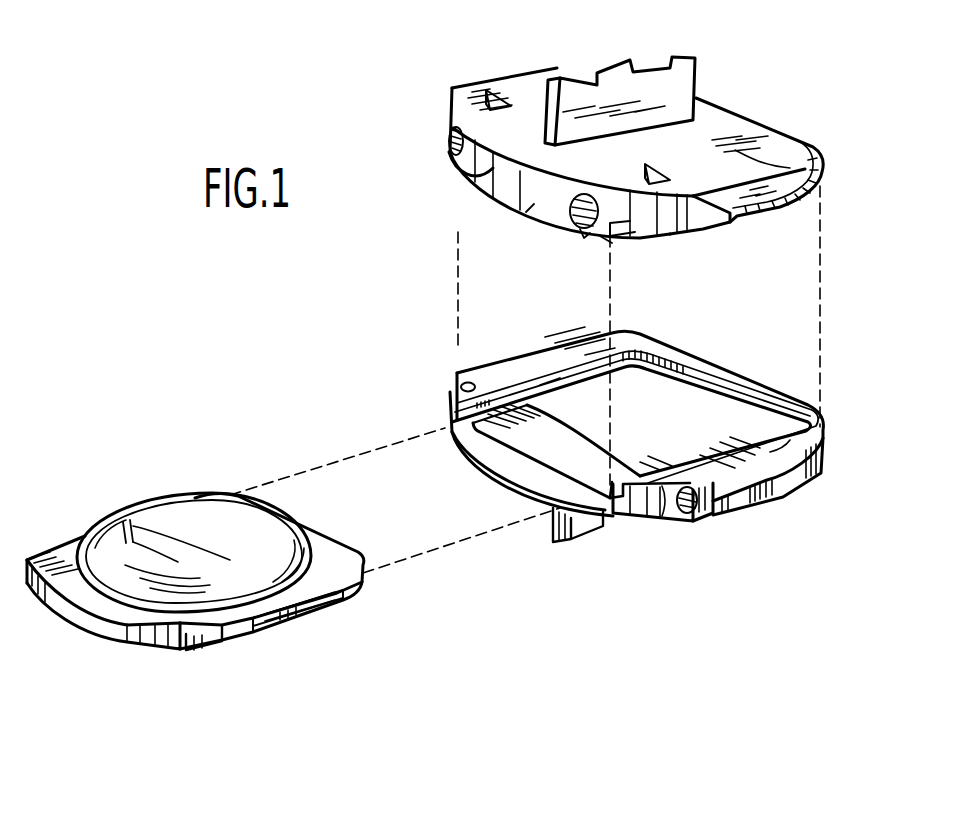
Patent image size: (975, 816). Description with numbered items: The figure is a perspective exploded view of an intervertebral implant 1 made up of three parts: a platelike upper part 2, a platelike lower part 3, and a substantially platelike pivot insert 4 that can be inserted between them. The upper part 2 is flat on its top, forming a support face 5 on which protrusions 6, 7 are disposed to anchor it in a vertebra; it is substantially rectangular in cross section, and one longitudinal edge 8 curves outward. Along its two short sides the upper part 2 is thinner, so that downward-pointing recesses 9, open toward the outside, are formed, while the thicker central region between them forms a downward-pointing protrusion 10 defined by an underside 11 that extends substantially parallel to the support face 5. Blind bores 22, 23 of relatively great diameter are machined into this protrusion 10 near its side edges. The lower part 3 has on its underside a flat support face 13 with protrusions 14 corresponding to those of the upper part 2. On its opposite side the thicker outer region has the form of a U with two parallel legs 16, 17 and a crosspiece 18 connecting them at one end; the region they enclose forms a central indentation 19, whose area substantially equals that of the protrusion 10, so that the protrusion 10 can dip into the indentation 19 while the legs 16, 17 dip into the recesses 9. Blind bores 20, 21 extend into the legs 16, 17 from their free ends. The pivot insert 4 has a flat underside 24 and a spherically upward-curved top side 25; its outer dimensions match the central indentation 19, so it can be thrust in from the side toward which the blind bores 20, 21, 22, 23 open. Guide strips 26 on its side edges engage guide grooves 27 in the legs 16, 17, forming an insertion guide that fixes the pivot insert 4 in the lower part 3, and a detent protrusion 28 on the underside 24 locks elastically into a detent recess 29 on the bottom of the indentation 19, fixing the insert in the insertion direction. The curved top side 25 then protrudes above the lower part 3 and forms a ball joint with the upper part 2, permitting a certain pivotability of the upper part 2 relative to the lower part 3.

The intervertebral implant 1 is at (450, 381).
The upper part 2 is at (607, 148).
The lower part 3 is at (599, 450).
The pivot insert 4 is at (195, 582).
The support face 5 is at (758, 155).
The protrusion 6 is at (602, 102).
The protrusion 7 is at (448, 88).
The longitudinal edge 8 is at (530, 213).
The recess 9 is at (622, 234).
The protrusion 10 is at (574, 238).
The underside 11 is at (598, 240).
The support face 13 is at (643, 523).
The protrusion 14 is at (567, 537).
The leg 16 is at (500, 362).
The leg 17 is at (777, 447).
The crosspiece 18 is at (703, 357).
The central indentation 19 is at (693, 417).
The blind bore 20 is at (457, 390).
The blind bore 21 is at (703, 523).
The blind bore 22 is at (447, 141).
The blind bore 23 is at (612, 238).
The underside 24 is at (77, 620).
The top side 25 is at (70, 557).
The guide strip 26 is at (290, 613).
The guide groove 27 is at (557, 380).
The detent protrusion 28 is at (203, 650).
The detent recess 29 is at (507, 435).